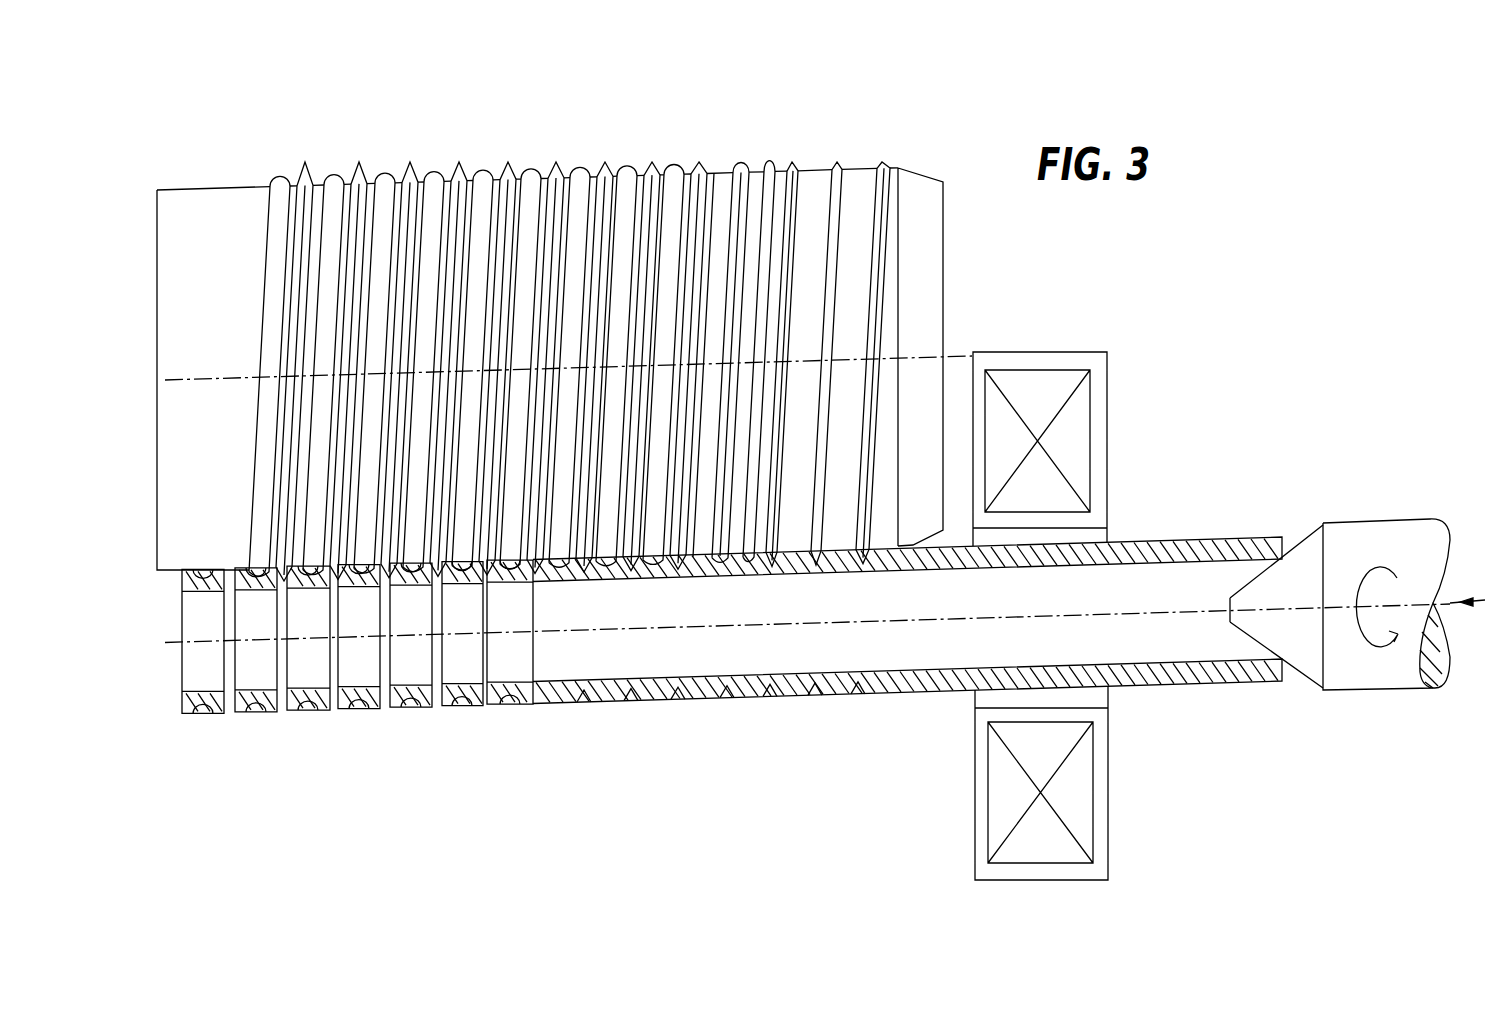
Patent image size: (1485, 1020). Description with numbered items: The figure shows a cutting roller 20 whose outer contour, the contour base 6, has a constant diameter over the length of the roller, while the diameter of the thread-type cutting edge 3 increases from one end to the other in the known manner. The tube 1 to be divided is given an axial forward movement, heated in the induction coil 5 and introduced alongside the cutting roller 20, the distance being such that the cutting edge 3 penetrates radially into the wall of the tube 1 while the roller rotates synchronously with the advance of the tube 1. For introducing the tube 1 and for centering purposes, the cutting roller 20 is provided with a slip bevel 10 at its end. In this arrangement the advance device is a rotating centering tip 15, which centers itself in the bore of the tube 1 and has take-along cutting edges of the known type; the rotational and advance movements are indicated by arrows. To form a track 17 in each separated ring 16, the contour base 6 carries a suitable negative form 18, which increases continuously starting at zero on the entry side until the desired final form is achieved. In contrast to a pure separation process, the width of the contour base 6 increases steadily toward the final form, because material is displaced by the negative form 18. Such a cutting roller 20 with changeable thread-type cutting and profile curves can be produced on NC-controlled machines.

The tube 1 is at (732, 726).
The cutting edge 3 is at (592, 309).
The induction coil 5 is at (1037, 413).
The contour base 6 is at (370, 183).
The slip bevel 10 is at (913, 545).
The rotating centering tip 15 is at (1345, 555).
The separated ring 16 is at (357, 738).
The track 17 is at (195, 710).
The negative form 18 is at (332, 183).
The cutting roller 20 is at (592, 304).